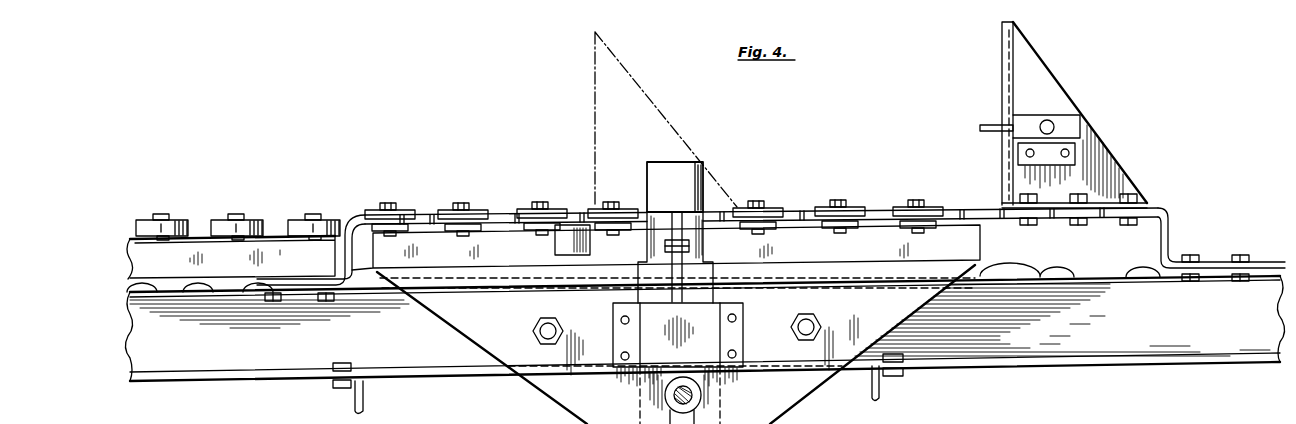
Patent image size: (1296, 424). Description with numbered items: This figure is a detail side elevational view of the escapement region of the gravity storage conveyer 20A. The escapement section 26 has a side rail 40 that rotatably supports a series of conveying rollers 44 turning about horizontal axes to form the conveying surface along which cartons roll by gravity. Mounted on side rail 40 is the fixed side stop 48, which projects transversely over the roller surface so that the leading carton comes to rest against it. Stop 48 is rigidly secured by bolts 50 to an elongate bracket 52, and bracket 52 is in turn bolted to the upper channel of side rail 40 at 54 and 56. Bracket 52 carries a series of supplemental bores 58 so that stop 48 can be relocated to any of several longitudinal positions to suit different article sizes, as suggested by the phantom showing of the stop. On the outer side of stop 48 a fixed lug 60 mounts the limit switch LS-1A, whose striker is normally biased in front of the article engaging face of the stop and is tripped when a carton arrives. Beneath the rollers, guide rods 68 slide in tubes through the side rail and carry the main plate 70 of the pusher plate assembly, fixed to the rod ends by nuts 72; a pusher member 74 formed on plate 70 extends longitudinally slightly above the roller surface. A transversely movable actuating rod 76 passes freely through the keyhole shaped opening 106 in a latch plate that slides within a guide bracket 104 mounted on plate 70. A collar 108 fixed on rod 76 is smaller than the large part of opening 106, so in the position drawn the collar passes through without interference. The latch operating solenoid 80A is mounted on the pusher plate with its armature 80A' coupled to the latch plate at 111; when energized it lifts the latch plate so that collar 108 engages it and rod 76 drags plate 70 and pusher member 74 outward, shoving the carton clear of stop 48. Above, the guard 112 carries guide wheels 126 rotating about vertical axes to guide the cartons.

The storage conveyer 20A is at (878, 137).
The escapement section 26 is at (415, 184).
The side rail 40 is at (1123, 326).
The conveying rollers 44 is at (1010, 268).
The side stop 48 is at (1052, 88).
The bolts 50 is at (1122, 226).
The elongate bracket 52 is at (1166, 238).
The bolt 54 is at (1240, 256).
The bolt 56 is at (324, 302).
The supplemental bores 58 is at (813, 213).
The fixed lug 60 is at (1068, 164).
The guide rods 68 is at (542, 325).
The main plate 70 is at (887, 308).
The nuts 72 is at (560, 318).
The pusher member 74 is at (817, 250).
The actuating rod 76 is at (692, 391).
The latch operating solenoid 80A is at (667, 216).
The solenoid armature 80A' is at (705, 257).
The guide bracket 104 is at (720, 308).
The keyhole shaped opening 106 is at (665, 386).
The collar 108 is at (699, 400).
The armature coupling 111 is at (668, 262).
The guard 112 is at (276, 237).
The guide wheels 126 is at (509, 210).
The limit switch LS-1A is at (1073, 122).